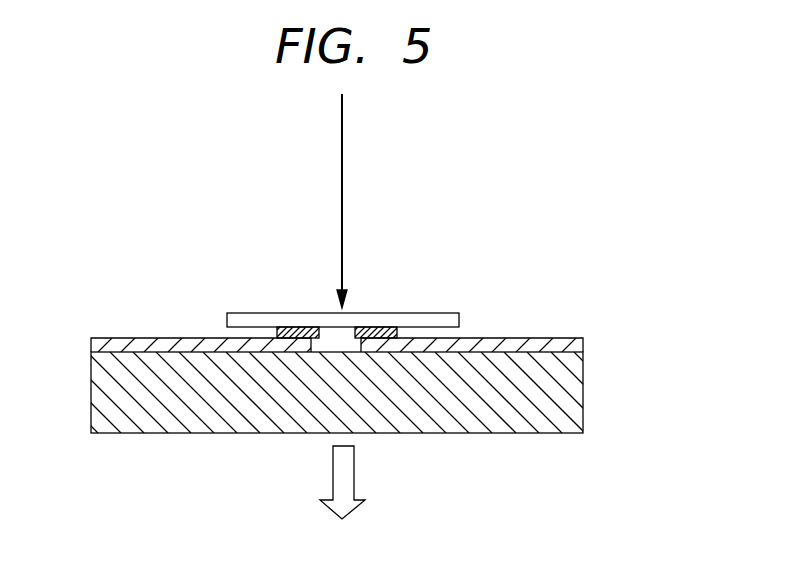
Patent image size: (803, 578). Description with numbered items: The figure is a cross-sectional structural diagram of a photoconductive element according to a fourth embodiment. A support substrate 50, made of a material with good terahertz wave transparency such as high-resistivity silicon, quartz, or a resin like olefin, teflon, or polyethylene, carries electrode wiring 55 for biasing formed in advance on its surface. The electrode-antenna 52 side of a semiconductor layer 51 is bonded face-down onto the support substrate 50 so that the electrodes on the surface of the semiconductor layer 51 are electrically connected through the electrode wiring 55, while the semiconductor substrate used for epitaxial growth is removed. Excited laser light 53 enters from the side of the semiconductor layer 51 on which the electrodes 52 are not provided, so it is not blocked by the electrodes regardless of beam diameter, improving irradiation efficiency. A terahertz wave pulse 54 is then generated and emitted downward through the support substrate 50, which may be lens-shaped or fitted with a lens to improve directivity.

The support substrate 50 is at (572, 395).
The semiconductor layer 51 is at (417, 322).
The electrode-antenna 52 is at (374, 338).
The excited laser light 53 is at (342, 157).
The terahertz wave pulse 54 is at (332, 472).
The electrode wiring 55 is at (518, 345).